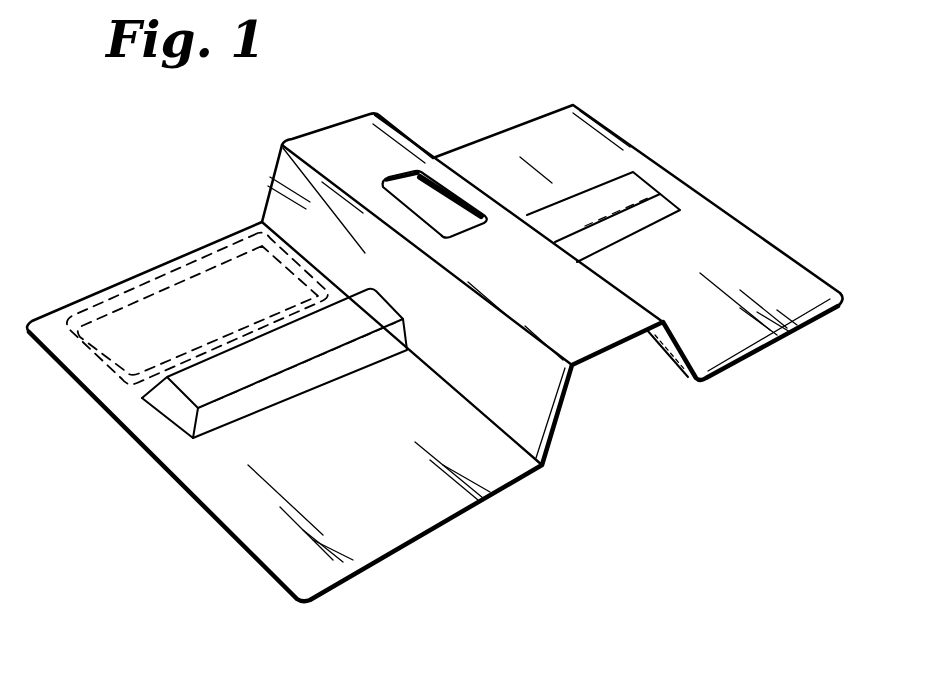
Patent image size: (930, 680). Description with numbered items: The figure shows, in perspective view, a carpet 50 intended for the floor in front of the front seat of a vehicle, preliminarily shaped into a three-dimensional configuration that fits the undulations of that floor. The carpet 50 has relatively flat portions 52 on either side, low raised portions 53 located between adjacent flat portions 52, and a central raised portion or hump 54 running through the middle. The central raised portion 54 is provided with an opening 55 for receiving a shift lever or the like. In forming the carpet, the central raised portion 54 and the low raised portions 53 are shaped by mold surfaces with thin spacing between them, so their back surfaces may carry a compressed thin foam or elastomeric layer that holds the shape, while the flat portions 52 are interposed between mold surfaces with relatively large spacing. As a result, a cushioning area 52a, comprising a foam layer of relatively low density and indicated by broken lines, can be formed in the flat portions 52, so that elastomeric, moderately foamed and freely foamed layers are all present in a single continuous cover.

The carpet 50 is at (250, 174).
The flat portions 52 is at (600, 148).
The cushioning area 52a is at (63, 320).
The low raised portions 53 is at (203, 392).
The central raised portion 54 is at (593, 322).
The opening 55 is at (420, 176).